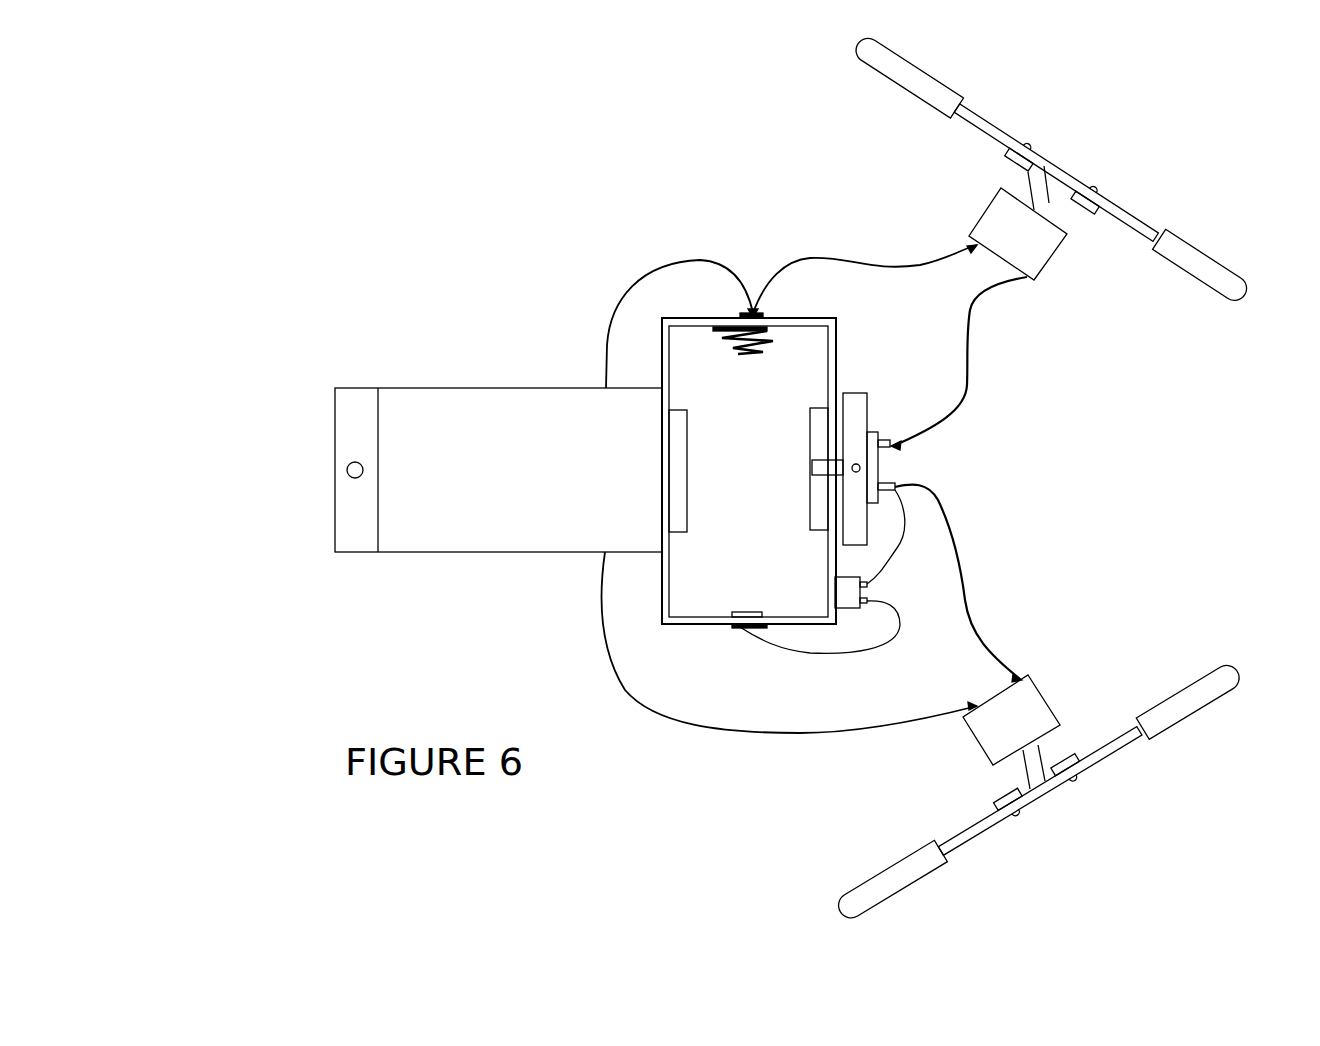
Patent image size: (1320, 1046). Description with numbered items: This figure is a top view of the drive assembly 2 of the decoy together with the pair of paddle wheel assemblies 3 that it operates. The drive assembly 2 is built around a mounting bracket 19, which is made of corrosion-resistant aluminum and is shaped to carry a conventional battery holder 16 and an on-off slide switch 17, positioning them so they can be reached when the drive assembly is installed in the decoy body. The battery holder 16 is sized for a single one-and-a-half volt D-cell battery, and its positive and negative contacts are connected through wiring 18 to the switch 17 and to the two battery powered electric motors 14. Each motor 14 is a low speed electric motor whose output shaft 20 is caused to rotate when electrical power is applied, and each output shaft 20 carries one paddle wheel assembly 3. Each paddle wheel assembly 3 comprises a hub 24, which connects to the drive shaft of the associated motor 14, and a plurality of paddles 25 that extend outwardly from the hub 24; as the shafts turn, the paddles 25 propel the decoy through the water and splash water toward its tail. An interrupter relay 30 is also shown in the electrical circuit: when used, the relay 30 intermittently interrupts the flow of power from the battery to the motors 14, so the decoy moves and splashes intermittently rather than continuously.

The drive assembly 2 is at (554, 580).
The paddle wheel assembly 3 is at (1042, 478).
The electric motor 14 is at (1033, 240).
The battery holder 16 is at (766, 482).
The on-off switch 17 is at (853, 408).
The wiring 18 is at (963, 567).
The mounting bracket 19 is at (350, 425).
The output shaft 20 is at (1030, 195).
The hub 24 is at (1045, 173).
The paddle 25 is at (1193, 267).
The interrupter relay 30 is at (843, 590).